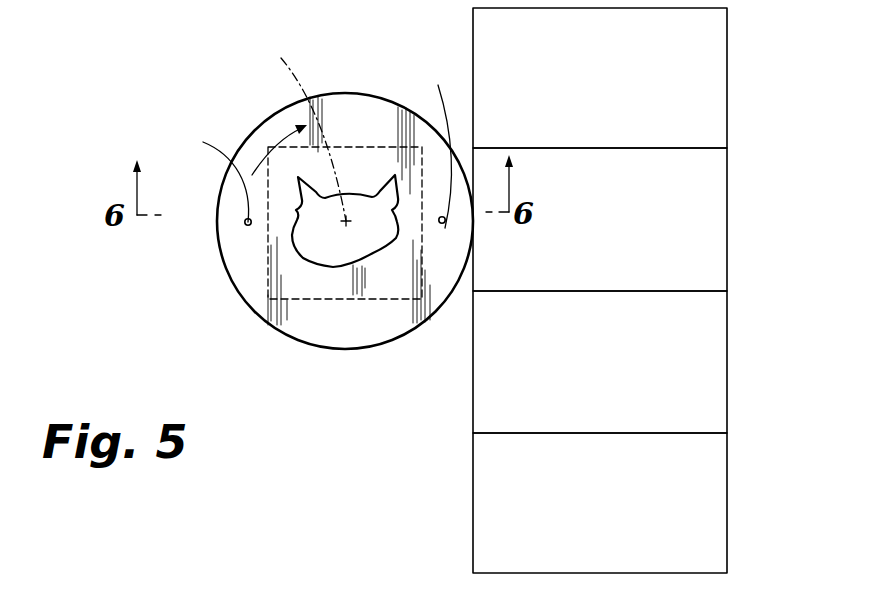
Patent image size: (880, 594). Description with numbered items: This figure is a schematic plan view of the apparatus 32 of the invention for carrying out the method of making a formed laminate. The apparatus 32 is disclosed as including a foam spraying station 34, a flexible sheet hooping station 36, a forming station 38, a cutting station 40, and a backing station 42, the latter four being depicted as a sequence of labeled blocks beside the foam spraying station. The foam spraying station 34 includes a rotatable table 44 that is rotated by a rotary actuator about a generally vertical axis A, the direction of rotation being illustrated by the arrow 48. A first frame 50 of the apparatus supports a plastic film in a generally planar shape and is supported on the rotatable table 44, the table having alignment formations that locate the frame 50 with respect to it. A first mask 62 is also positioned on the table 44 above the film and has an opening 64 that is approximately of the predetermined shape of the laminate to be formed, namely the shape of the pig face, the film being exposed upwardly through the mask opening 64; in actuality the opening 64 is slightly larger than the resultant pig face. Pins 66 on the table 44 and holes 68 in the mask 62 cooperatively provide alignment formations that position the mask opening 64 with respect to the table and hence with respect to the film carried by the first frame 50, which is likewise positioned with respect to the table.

The apparatus 32 is at (370, 53).
The foam spraying station 34 is at (252, 326).
The flexible sheet hooping station 36 is at (738, 97).
The forming station 38 is at (738, 214).
The cutting station 40 is at (738, 352).
The backing station 42 is at (738, 493).
The rotatable table 44 is at (236, 302).
The arrow 48 is at (277, 140).
The first frame 50 is at (366, 306).
The first mask 62 is at (375, 117).
The opening 64 is at (330, 260).
The pins 66 is at (316, 143).
The holes 68 is at (247, 224).
The vertical axis A is at (306, 134).